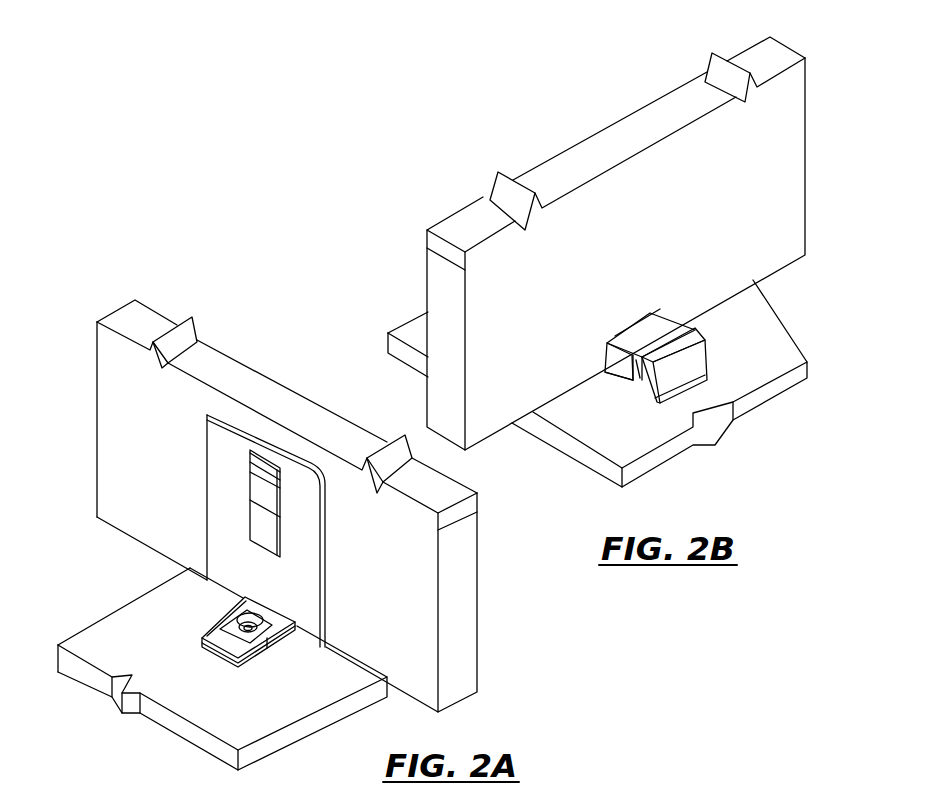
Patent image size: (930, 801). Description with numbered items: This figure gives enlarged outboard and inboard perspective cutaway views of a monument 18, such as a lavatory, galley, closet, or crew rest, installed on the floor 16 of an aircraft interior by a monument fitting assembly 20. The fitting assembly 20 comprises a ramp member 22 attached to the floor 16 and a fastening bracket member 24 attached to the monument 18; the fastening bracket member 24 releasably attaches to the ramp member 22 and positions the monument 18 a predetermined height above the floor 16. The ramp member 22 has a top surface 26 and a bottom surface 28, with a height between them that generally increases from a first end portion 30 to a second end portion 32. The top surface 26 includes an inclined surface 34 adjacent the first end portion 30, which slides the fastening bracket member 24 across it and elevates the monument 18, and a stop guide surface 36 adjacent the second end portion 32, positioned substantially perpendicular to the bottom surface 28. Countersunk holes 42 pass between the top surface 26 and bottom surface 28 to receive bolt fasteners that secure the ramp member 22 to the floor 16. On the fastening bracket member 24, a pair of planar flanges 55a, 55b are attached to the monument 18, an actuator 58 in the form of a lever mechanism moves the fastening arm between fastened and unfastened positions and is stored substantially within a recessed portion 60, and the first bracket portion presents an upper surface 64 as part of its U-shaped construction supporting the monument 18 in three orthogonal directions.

In FIG. 2A, the floor 16 is at (133, 606).
In FIG. 2B, the floor 16 is at (396, 332).
In FIG. 2A, the monument 18 is at (97, 380).
In FIG. 2B, the monument 18 is at (427, 287).
In FIG. 2A, the monument fitting assembly 20 is at (260, 531).
In FIG. 2B, the monument fitting assembly 20 is at (679, 380).
In FIG. 2A, the ramp member 22 is at (218, 647).
In FIG. 2B, the ramp member 22 is at (679, 349).
In FIG. 2A, the fastening bracket member 24 is at (265, 496).
In FIG. 2B, the fastening bracket member 24 is at (672, 306).
In FIG. 2A, the top surface 26 is at (223, 612).
In FIG. 2B, the bottom surface 28 is at (608, 383).
In FIG. 2A, the first end portion 30 is at (200, 648).
In FIG. 2B, the second end portion 32 is at (703, 350).
In FIG. 2A, the inclined surface 34 is at (242, 598).
In FIG. 2B, the stop guide surface 36 is at (607, 348).
In FIG. 2A, the countersunk holes 42 is at (244, 633).
In FIG. 2A, the planar flange 55a is at (240, 420).
In FIG. 2A, the planar flange 55b is at (307, 458).
In FIG. 2A, the actuator 58 is at (267, 507).
In FIG. 2A, the recessed portion 60 is at (253, 487).
In FIG. 2B, the upper surface 64 is at (682, 314).